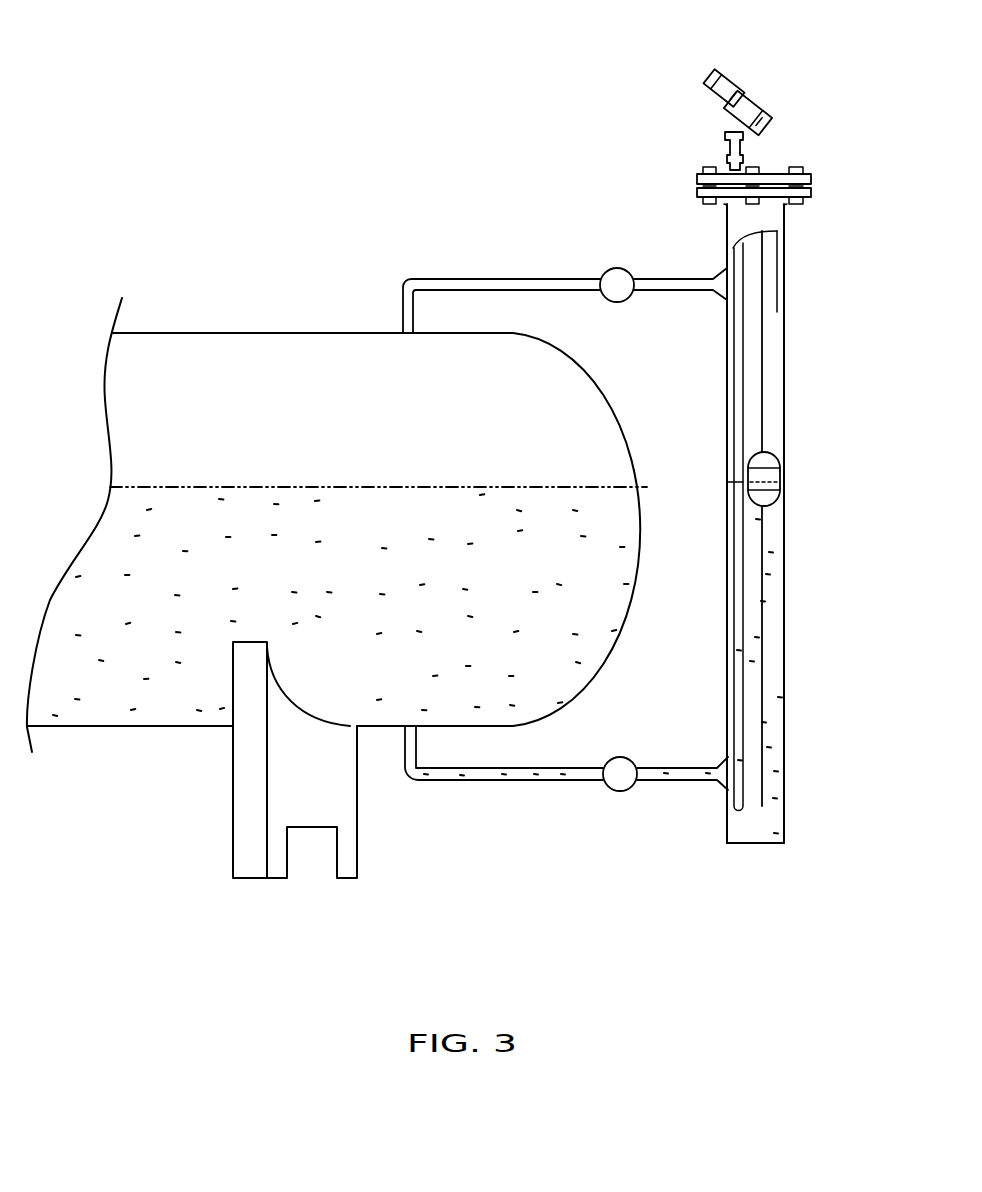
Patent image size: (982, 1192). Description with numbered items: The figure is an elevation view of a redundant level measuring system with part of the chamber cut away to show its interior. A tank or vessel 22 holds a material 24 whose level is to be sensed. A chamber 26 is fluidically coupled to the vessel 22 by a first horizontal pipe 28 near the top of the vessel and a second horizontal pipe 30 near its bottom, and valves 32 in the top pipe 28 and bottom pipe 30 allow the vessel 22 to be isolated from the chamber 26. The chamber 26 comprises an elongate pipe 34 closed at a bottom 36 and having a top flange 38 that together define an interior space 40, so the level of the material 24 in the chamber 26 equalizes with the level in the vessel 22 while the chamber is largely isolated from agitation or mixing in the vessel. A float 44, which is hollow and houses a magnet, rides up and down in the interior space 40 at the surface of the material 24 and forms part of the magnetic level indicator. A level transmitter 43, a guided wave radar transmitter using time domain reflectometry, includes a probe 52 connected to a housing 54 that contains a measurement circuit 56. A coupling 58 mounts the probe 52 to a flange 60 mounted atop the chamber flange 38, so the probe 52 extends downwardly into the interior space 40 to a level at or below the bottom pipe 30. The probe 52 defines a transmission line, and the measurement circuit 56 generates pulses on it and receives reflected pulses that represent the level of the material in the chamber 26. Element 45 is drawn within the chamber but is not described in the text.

The vessel 22 is at (608, 425).
The material 24 is at (283, 486).
The chamber 26 is at (740, 221).
The first horizontal pipe 28 is at (508, 280).
The second horizontal pipe 30 is at (512, 780).
The valve 32 is at (620, 268).
The elongate pipe 34 is at (787, 792).
The bottom 36 is at (757, 845).
The top flange 38 is at (812, 193).
The interior space 40 is at (772, 358).
The level transmitter 43 is at (744, 91).
The float 44 is at (780, 475).
The probe rod 45 is at (763, 415).
The probe 52 is at (742, 300).
The housing 54 is at (758, 133).
The measurement circuit 56 is at (755, 100).
The coupling 58 is at (730, 158).
The flange 60 is at (811, 180).